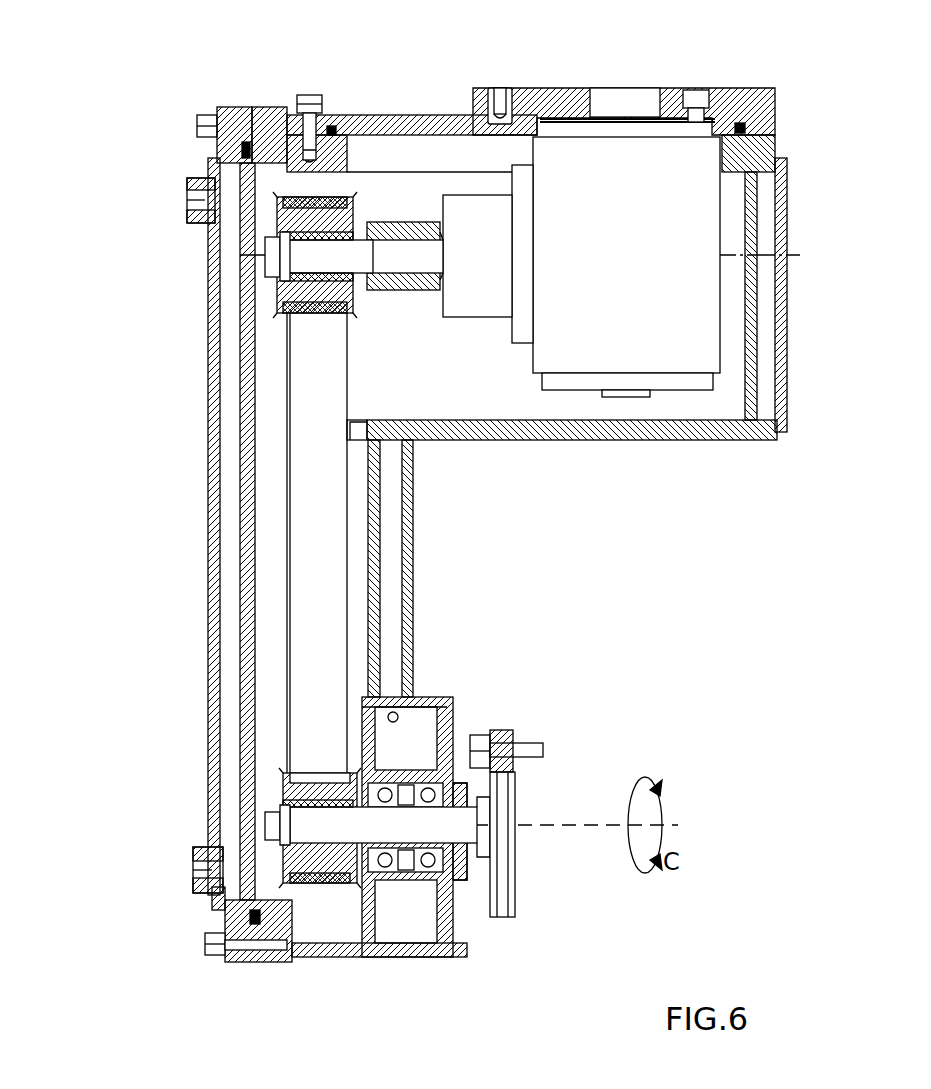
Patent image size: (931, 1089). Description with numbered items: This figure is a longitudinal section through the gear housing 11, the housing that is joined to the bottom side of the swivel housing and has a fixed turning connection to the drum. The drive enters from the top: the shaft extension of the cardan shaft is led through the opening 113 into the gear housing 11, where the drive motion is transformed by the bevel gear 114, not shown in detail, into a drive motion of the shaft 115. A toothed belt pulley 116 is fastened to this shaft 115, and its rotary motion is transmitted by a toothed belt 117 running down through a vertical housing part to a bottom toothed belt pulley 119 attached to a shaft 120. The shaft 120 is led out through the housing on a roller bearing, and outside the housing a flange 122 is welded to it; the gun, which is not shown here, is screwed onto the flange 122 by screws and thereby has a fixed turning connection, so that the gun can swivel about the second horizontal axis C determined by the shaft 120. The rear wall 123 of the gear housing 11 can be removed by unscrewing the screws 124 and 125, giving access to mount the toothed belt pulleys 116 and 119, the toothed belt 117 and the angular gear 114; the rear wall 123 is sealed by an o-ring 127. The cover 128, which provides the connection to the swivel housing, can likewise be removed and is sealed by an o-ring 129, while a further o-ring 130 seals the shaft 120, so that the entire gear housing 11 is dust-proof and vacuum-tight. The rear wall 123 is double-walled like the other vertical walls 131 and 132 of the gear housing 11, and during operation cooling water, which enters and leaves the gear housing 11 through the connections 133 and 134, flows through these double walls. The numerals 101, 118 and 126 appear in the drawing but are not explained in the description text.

The gear housing 11 is at (660, 468).
The bearing housing 101 is at (387, 870).
The opening 113 is at (628, 108).
The bevel gear 114 is at (690, 224).
The shaft 115 is at (403, 250).
The toothed belt pulley 116 is at (277, 300).
The toothed belt 117 is at (320, 572).
The plate 118 is at (208, 719).
The bottom toothed belt pulley 119 is at (287, 865).
The shaft 120 is at (323, 830).
The flange 122 is at (503, 903).
The rear wall 123 is at (208, 528).
The screw 124 is at (212, 952).
The screw 125 is at (203, 113).
The bolt 126 is at (312, 95).
The o-ring 127 is at (268, 957).
The cover 128 is at (462, 113).
The o-ring 129 is at (352, 116).
The o-ring 130 is at (455, 880).
The vertical wall 131 is at (421, 618).
The vertical wall 132 is at (792, 308).
The connection 133 is at (195, 202).
The connection 134 is at (207, 868).